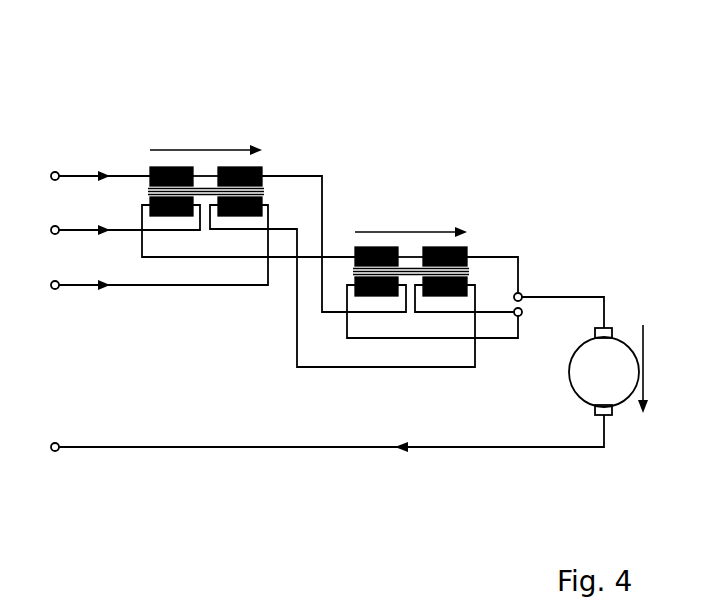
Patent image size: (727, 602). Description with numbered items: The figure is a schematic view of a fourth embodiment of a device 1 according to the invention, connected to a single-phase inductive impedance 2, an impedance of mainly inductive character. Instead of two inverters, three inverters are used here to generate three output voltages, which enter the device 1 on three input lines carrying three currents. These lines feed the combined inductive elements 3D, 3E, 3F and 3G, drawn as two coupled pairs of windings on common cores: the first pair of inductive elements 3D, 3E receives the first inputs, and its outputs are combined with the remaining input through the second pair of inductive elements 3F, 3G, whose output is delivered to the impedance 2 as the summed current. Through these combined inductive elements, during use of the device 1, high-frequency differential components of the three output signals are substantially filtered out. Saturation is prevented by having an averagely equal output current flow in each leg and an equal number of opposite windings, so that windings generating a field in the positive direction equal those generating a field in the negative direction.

The device 1 is at (310, 241).
The single-phase inductive impedance 2 is at (635, 314).
The inductive element 3D is at (191, 156).
The inductive element 3E is at (258, 157).
The inductive element 3F is at (399, 238).
The inductive element 3G is at (462, 238).